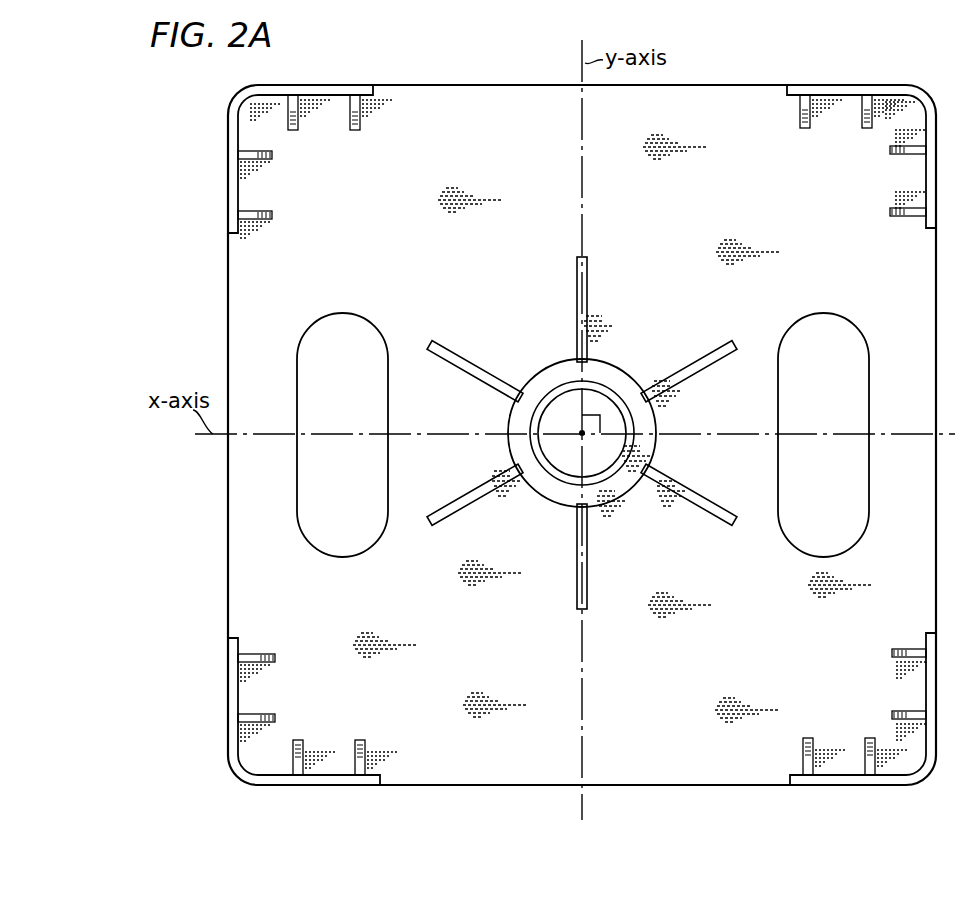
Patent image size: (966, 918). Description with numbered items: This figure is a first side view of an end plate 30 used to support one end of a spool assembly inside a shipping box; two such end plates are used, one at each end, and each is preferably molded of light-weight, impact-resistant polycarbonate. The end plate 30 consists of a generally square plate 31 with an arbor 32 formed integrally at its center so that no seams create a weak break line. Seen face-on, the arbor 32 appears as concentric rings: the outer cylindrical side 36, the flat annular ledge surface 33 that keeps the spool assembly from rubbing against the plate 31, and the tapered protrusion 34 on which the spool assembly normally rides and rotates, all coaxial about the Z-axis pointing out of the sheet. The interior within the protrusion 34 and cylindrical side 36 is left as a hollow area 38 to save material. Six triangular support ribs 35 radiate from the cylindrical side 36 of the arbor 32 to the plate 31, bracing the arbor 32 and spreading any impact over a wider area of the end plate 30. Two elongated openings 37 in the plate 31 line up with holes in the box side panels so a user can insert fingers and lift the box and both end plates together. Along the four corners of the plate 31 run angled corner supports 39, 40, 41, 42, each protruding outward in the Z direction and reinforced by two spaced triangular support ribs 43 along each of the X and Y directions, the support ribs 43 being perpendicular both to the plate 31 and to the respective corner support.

The end plate 30 is at (514, 71).
The plate 31 is at (713, 103).
The arbor 32 is at (510, 292).
The flat annular ledge surface 33 is at (610, 497).
The protrusion 34 is at (605, 397).
The support ribs 35 is at (588, 290).
The cylindrical side 36 is at (548, 500).
The openings 37 is at (343, 557).
The hollow area 38 is at (608, 463).
The corner support 39 is at (250, 97).
The corner support 40 is at (900, 90).
The corner support 41 is at (863, 777).
The corner support 42 is at (236, 722).
The support ribs 43 is at (298, 132).